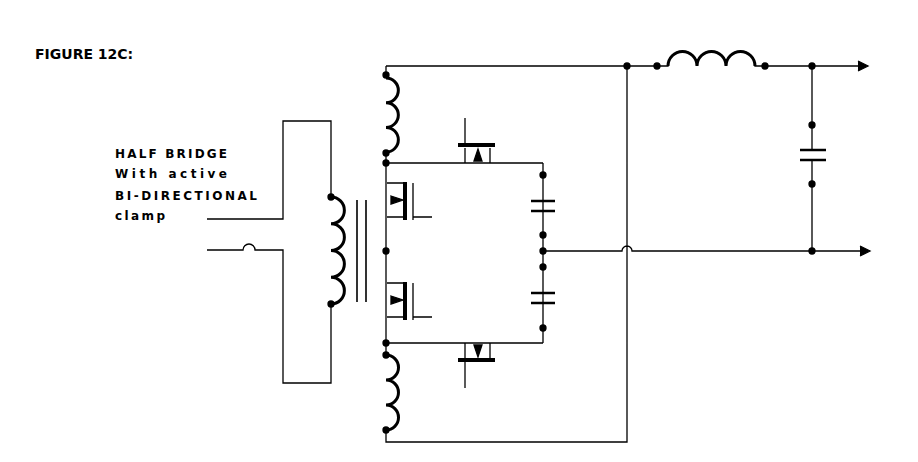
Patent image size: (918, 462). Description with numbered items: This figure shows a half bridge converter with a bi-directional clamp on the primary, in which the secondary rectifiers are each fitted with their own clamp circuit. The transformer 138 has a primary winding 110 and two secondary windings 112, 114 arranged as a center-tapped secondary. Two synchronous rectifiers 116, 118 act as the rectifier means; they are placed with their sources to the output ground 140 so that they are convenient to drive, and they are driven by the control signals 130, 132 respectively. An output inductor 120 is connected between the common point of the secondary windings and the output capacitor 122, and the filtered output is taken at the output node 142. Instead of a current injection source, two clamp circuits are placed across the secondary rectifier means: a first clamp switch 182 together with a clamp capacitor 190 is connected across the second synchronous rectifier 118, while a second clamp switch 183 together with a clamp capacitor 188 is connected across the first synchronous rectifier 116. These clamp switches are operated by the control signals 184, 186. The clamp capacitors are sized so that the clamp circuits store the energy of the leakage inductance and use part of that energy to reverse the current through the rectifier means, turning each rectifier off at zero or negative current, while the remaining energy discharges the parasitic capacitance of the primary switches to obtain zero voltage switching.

The primary winding 110 is at (328, 252).
The secondary winding 112 is at (403, 106).
The secondary winding 114 is at (403, 407).
The synchronous rectifier SR1 116 is at (435, 179).
The synchronous rectifier SR2 118 is at (424, 279).
The output inductor 120 is at (707, 45).
The output capacitor 122 is at (803, 145).
The control signal VCSR1 130 is at (446, 217).
The control signal VCSR2 132 is at (433, 288).
The transformer 138 is at (357, 102).
The output ground 140 is at (817, 254).
The output terminal Vo 142 is at (817, 72).
The clamp switch Ms1 182 is at (503, 350).
The clamp switch MS2 183 is at (500, 145).
The control signal VCMS1 184 is at (470, 388).
The control signal VCMS2 186 is at (467, 120).
The clamp capacitor 188 is at (558, 208).
The clamp capacitor Cs2 190 is at (557, 302).